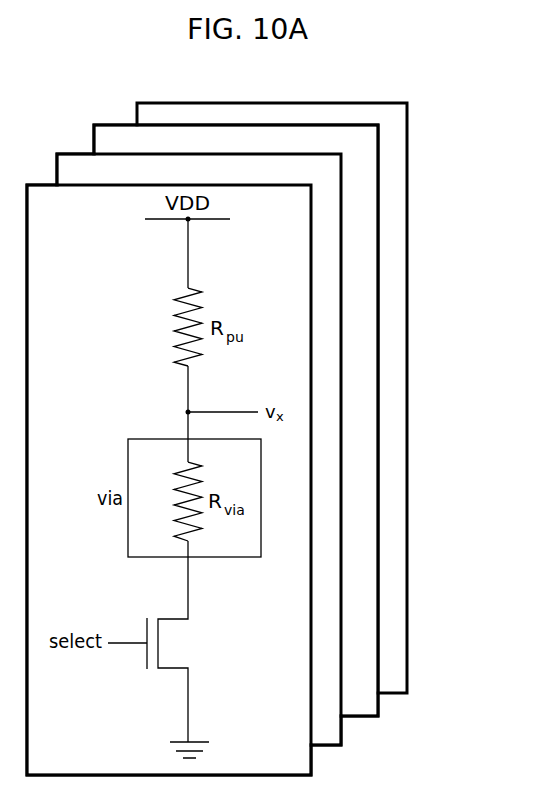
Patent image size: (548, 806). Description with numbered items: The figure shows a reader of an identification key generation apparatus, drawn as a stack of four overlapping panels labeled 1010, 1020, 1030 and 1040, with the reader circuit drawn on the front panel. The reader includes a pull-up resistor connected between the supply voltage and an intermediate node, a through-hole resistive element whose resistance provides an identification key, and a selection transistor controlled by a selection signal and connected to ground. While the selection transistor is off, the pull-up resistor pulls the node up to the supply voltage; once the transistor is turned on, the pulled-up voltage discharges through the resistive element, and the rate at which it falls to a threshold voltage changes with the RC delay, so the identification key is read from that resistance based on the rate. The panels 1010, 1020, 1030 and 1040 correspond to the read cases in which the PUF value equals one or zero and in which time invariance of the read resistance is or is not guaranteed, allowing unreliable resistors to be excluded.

The PUF=1 read case 1010 is at (409, 345).
The PUF=1 non-guaranteed time-invariance case 1020 is at (379, 393).
The PUF=0 non-guaranteed time-invariance case 1030 is at (343, 436).
The PUF=0 read case 1040 is at (313, 480).